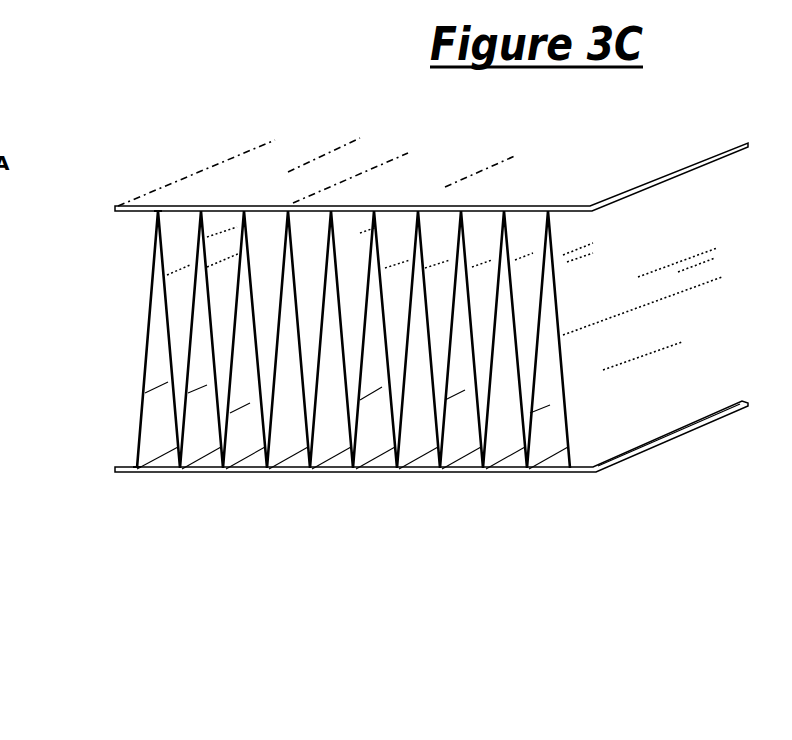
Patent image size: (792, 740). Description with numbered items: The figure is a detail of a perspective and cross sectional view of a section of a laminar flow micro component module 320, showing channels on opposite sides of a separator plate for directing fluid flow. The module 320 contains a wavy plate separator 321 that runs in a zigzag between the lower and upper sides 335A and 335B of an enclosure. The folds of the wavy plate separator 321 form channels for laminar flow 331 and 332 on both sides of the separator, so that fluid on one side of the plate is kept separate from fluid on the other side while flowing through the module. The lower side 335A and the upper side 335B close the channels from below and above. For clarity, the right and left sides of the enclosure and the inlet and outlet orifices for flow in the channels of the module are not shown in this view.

The micro component module 320 is at (593, 182).
The wavy plate separator 321 is at (146, 359).
The channel for laminar flow 331 is at (158, 440).
The channel for laminar flow 332 is at (183, 251).
The lower side of enclosure 335A is at (482, 470).
The upper side of enclosure 335B is at (342, 168).